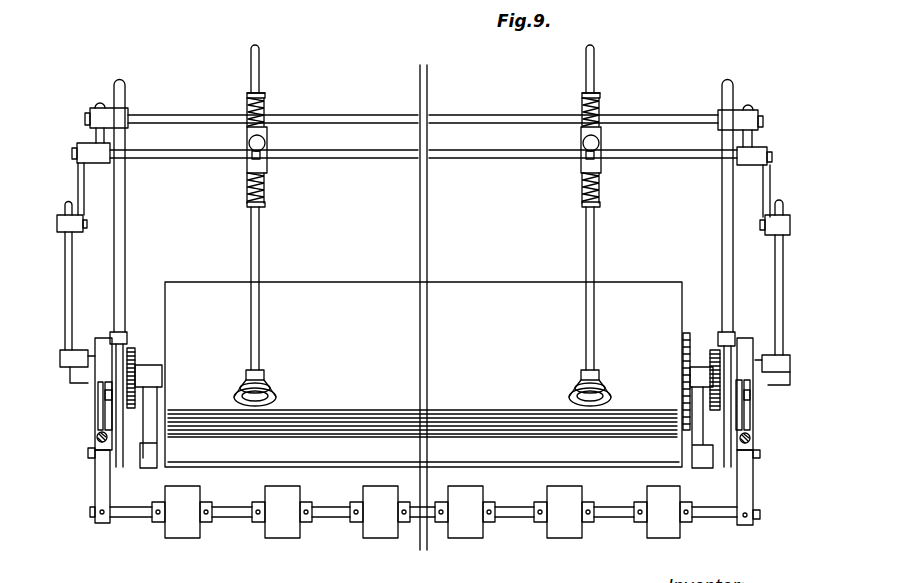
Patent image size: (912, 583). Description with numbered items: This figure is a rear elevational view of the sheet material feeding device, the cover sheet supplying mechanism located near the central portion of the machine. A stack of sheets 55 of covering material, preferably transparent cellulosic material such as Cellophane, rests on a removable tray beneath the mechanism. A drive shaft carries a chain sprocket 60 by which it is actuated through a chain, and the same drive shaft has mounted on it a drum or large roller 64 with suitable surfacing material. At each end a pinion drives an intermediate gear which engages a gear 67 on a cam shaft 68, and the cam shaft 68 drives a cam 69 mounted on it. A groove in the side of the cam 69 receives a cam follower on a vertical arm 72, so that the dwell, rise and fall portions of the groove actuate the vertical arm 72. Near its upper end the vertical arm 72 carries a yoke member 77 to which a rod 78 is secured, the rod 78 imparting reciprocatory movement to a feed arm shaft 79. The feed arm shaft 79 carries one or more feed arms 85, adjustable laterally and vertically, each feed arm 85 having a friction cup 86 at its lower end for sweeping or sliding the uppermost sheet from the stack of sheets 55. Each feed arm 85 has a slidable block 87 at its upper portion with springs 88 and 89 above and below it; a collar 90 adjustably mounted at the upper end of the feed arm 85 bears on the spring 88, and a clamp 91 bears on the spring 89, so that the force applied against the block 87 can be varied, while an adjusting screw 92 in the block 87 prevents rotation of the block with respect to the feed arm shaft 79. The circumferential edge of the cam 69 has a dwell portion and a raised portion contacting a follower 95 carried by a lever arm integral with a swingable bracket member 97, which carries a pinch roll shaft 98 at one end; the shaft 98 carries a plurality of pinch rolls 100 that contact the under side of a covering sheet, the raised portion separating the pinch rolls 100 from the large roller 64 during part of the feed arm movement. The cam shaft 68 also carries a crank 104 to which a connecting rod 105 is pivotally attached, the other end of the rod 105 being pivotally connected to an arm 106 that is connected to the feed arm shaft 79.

The stack of sheets 55 is at (505, 437).
The chain sprocket 60 is at (684, 355).
The drum or large roller 64 is at (370, 285).
The gear 67 is at (716, 350).
The cam shaft 68 is at (708, 365).
The cam 69 is at (738, 340).
The vertical arm 72 is at (725, 248).
The yoke member 77 is at (735, 118).
The rod 78 is at (752, 138).
The feed arm shaft 79 is at (490, 156).
The feed arm 85 is at (587, 248).
The friction cup 86 is at (578, 390).
The slidable block 87 is at (601, 165).
The spring 88 is at (602, 112).
The spring 89 is at (601, 195).
The collar 90 is at (600, 100).
The clamp 91 is at (262, 206).
The adjusting screw 92 is at (583, 143).
The follower 95 is at (748, 405).
The swingable bracket member 97 is at (753, 500).
The pinch roll shaft 98 is at (716, 518).
The pinch rolls 100 is at (572, 535).
The crank 104 is at (66, 391).
The connecting rod 105 is at (783, 305).
The arm 106 is at (770, 187).